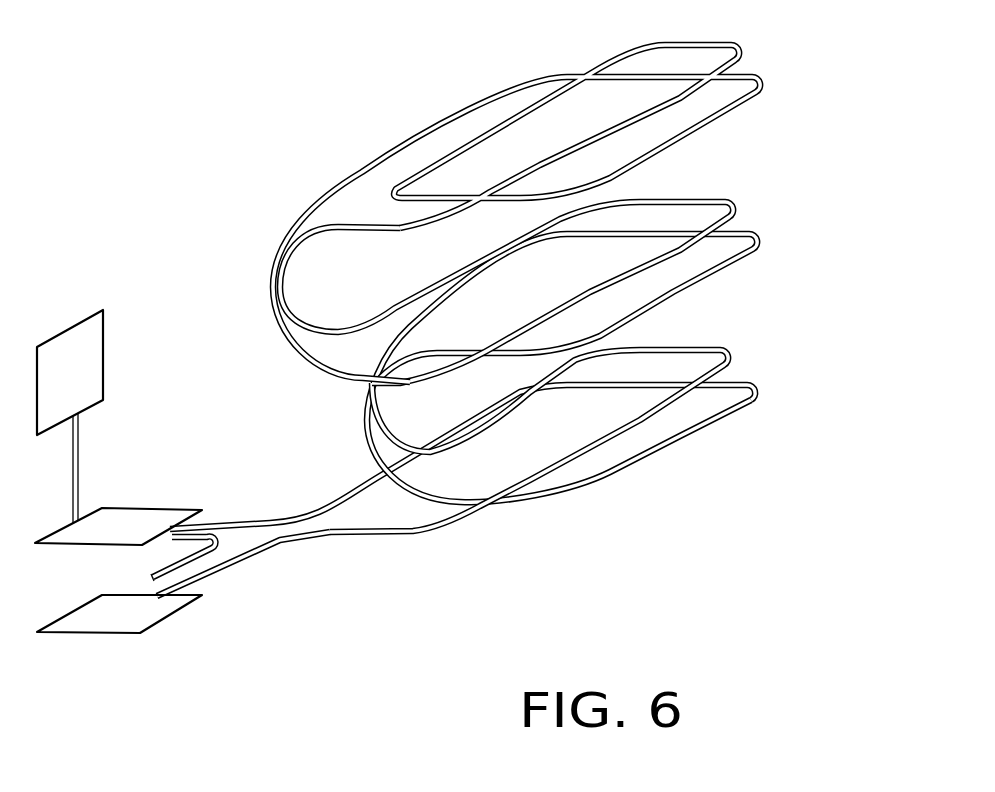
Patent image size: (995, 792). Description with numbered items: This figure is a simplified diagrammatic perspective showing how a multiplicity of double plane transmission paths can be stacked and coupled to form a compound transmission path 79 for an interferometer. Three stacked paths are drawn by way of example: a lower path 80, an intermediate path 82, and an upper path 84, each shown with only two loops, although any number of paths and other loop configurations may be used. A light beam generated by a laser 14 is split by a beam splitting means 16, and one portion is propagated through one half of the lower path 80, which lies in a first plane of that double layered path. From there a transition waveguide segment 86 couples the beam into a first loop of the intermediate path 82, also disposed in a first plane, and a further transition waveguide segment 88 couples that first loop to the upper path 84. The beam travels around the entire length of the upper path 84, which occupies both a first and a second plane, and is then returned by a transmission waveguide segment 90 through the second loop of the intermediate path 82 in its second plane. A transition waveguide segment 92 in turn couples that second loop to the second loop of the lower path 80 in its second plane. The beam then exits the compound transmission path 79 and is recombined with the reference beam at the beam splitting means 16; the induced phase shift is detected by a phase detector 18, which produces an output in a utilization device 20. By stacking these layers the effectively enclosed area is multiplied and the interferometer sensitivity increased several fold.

The compound transmission path 79 is at (493, 299).
The lower transmission path 80 is at (766, 393).
The intermediate transmission path 82 is at (766, 243).
The upper transmission path 84 is at (768, 70).
The transition waveguide segment 86 is at (369, 395).
The transition waveguide segment 88 is at (272, 263).
The transmission waveguide segment 90 is at (284, 283).
The transition waveguide segment 92 is at (386, 426).
The laser 14 is at (128, 625).
The beam splitting means 16 is at (198, 547).
The phase detector 18 is at (118, 516).
The utilization device 20 is at (94, 362).